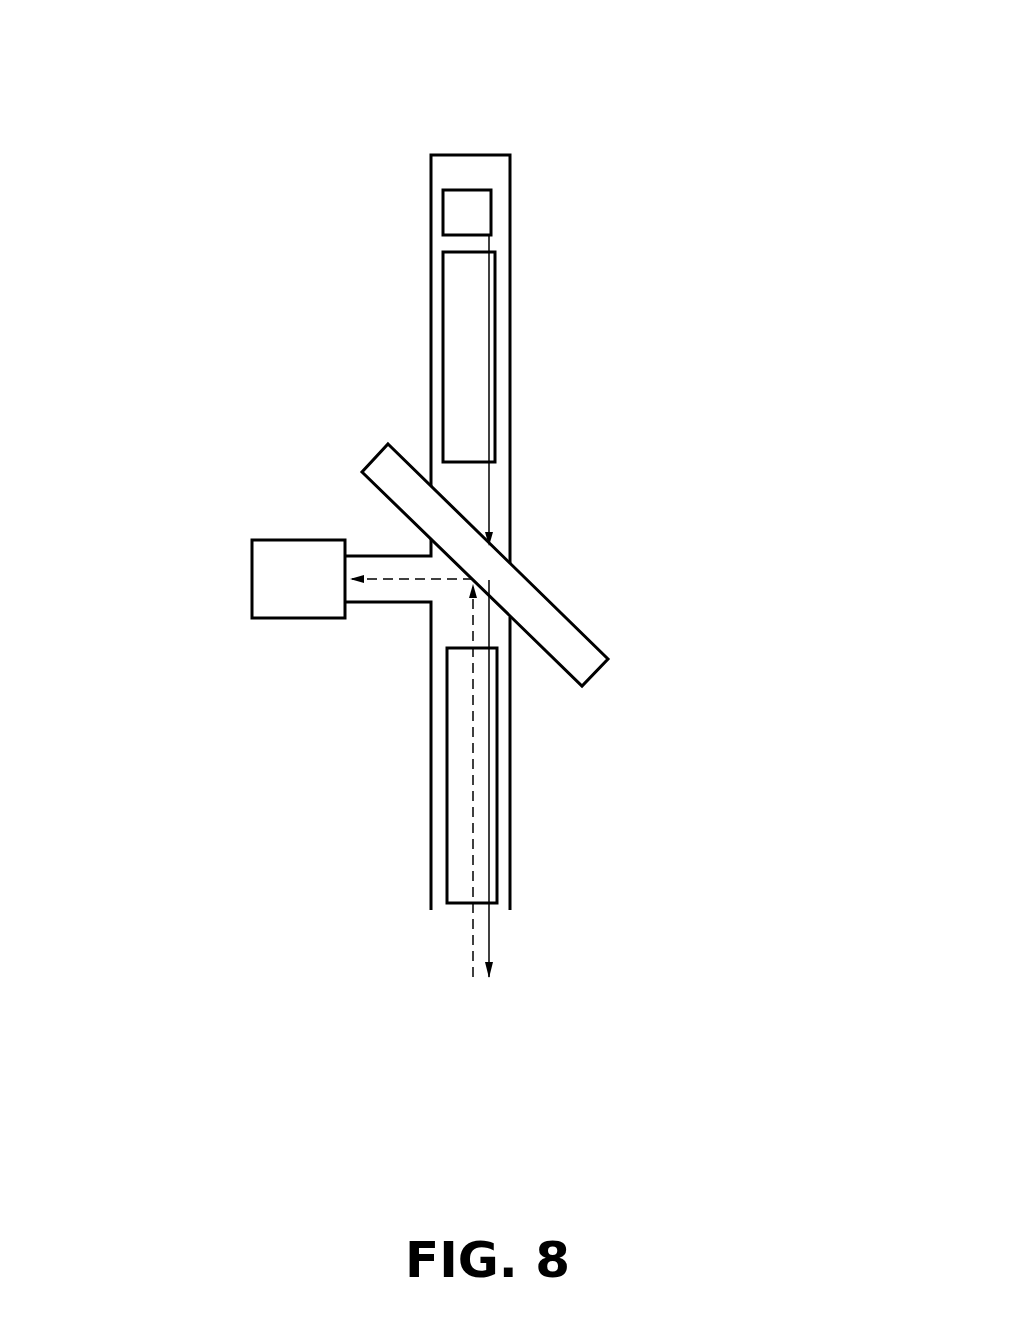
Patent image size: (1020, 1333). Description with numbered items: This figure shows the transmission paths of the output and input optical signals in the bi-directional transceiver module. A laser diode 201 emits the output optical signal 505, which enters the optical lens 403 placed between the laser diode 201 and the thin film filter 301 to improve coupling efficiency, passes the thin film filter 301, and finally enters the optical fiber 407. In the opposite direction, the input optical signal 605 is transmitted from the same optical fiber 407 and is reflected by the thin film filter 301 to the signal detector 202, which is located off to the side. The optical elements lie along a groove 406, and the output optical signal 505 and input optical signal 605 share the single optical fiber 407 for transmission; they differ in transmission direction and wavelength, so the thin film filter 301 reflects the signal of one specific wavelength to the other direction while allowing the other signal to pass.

The laser diode 201 is at (460, 216).
The optical lens 403 is at (495, 373).
The groove 406 is at (495, 492).
The thin film filter 301 is at (550, 611).
The signal detector 202 is at (280, 575).
The optical fiber 407 is at (488, 780).
The output optical signal 505 is at (500, 935).
The input optical signal 605 is at (458, 948).